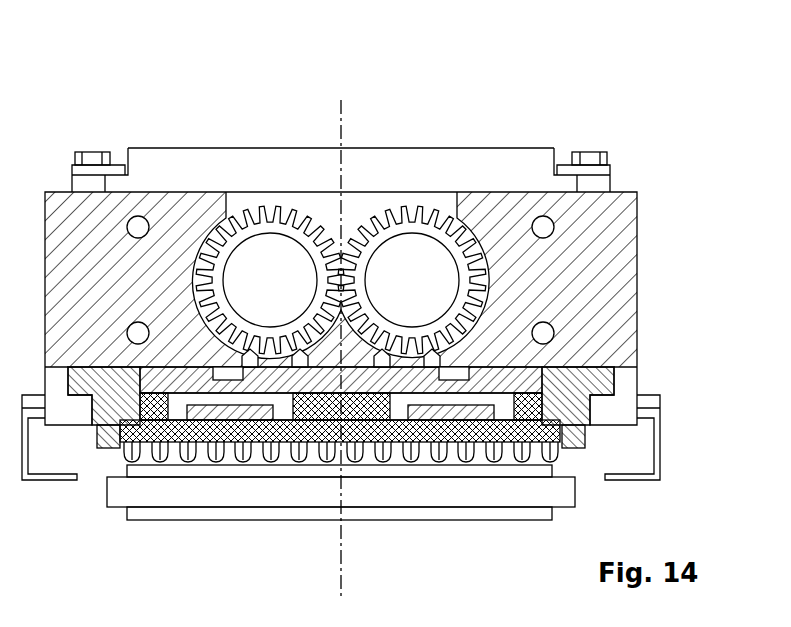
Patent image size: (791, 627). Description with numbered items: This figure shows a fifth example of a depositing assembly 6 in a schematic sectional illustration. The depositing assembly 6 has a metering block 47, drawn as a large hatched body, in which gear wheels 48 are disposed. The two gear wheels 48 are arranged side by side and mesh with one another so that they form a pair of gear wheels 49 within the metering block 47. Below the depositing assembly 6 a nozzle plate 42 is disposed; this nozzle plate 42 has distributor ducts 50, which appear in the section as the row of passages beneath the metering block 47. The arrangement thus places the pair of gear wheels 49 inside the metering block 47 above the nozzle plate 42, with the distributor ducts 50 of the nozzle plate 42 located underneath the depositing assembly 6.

The depositing assembly 6 is at (606, 107).
The nozzle plate 42 is at (580, 380).
The metering block 47 is at (602, 219).
The gear wheels 48 is at (467, 280).
The pair of gear wheels 49 is at (332, 225).
The distributor ducts 50 is at (131, 425).